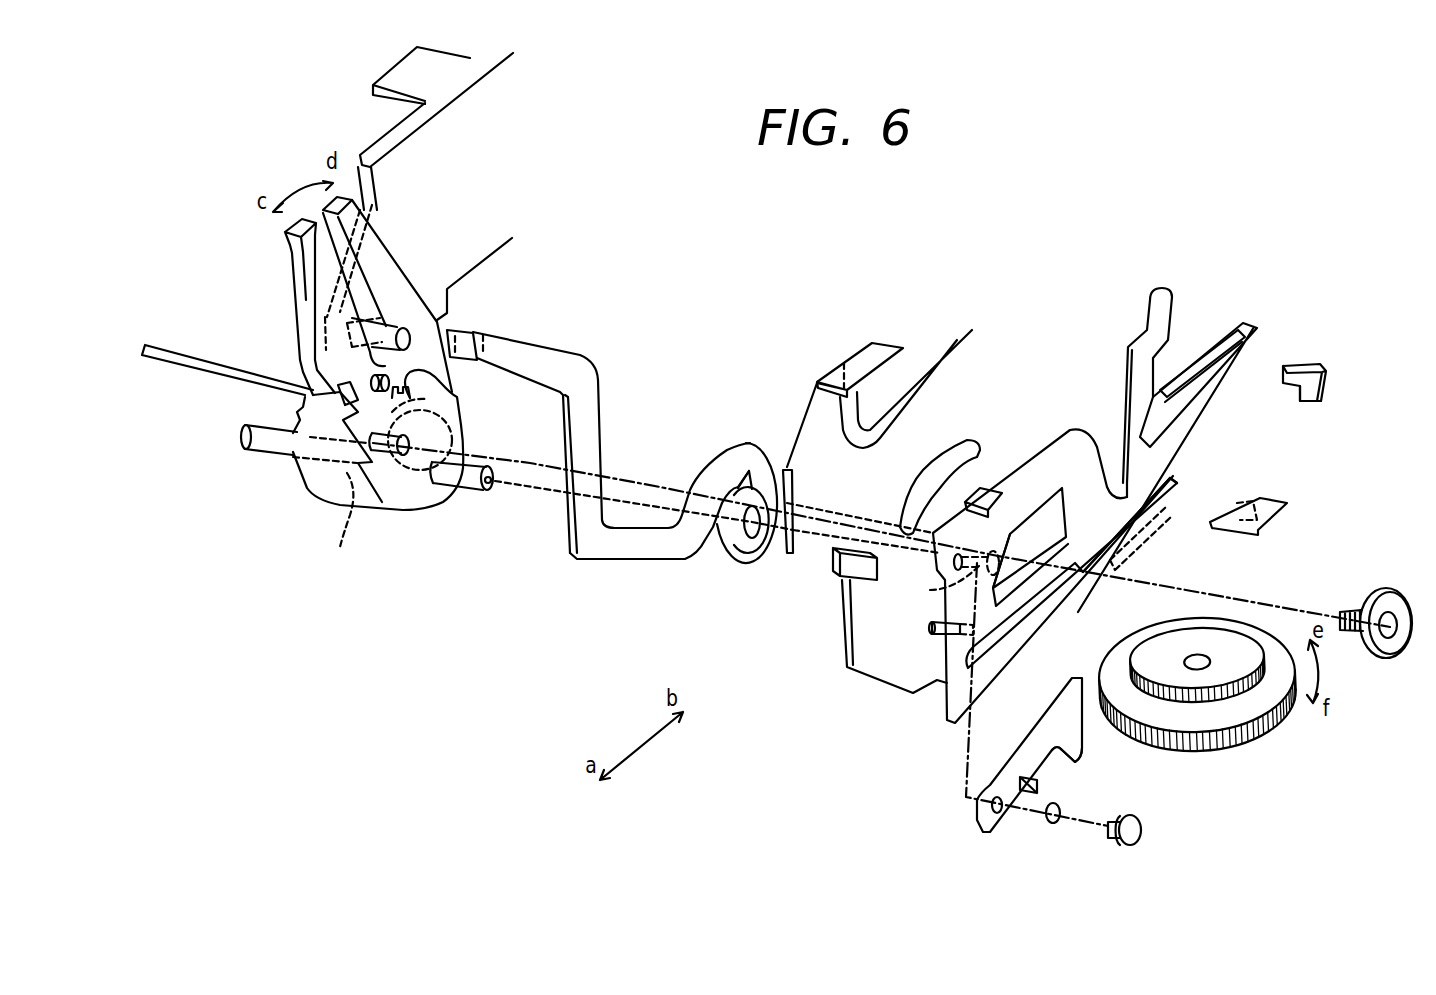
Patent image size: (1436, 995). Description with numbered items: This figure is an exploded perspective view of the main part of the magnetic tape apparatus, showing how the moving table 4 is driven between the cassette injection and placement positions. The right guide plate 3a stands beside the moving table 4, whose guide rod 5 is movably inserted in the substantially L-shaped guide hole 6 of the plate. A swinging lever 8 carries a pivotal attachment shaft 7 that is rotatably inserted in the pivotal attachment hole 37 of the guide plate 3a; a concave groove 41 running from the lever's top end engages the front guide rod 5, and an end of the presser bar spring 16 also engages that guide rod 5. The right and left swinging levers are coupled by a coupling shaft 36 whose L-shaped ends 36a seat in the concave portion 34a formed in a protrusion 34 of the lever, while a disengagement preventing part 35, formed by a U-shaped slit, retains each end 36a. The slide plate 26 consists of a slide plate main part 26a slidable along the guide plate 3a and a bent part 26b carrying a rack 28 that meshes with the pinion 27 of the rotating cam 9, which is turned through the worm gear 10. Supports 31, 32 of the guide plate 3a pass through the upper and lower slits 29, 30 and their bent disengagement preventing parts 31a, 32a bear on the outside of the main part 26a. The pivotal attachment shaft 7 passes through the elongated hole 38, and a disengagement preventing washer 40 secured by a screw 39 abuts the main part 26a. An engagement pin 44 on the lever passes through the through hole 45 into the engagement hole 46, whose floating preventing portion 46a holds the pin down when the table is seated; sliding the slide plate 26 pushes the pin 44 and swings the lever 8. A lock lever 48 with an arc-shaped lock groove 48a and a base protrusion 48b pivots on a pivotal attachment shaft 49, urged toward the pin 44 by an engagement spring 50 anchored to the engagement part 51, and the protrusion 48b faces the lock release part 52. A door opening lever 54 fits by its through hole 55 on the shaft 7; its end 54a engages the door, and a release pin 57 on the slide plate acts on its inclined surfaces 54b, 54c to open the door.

The right guide plate 3a is at (853, 658).
The moving table 4 is at (486, 272).
The guide rod 5 is at (407, 325).
The guide hole 6 is at (898, 393).
The pivotal attachment shaft 7 is at (470, 490).
The swinging lever 8 is at (395, 273).
The rotating cam 9 is at (1218, 755).
The worm gear 10 is at (1276, 722).
The presser bar spring 16 is at (372, 303).
The slide plate 26 is at (1357, 425).
The slide plate main part 26a is at (1218, 418).
The bent part 26b is at (1213, 493).
The pinion 27 is at (1233, 728).
The rack 28 is at (1181, 492).
The upper slit 29 is at (1198, 395).
The lower slit 30 is at (1127, 497).
The support 31 is at (1314, 362).
The disengagement preventing part 31a is at (1313, 403).
The support 32 is at (1220, 532).
The disengagement preventing part 32a is at (1245, 528).
The protrusion 34 is at (318, 496).
The concave portion 34a is at (342, 540).
The disengagement preventing part 35 is at (450, 396).
The coupling shaft 36 is at (257, 448).
The end of coupling shaft 36a is at (452, 437).
The pivotal attachment hole 37 is at (930, 590).
The elongated hole 38 is at (1023, 612).
The screw 39 is at (1387, 606).
The disengagement preventing washer 40 is at (1389, 640).
The concave groove 41 is at (332, 265).
The engagement pin 44 is at (393, 507).
The through hole 45 is at (922, 484).
The engagement hole 46 is at (1046, 510).
The floating preventing portion 46a is at (1026, 520).
The lock lever 48 is at (1047, 717).
The lock groove 48a is at (1070, 752).
The protrusion 48b is at (982, 830).
The pivotal attachment shaft 49 is at (1142, 820).
The engagement spring 50 is at (1052, 819).
The engagement part 51 is at (985, 488).
The lock release part 52 is at (841, 578).
The door opening lever 54 is at (600, 443).
The end of door opening lever 54a is at (474, 329).
The inclined surface 54b is at (607, 560).
The rear inclined surface 54c is at (712, 545).
The through hole 55 is at (744, 538).
The release pin 57 is at (937, 636).